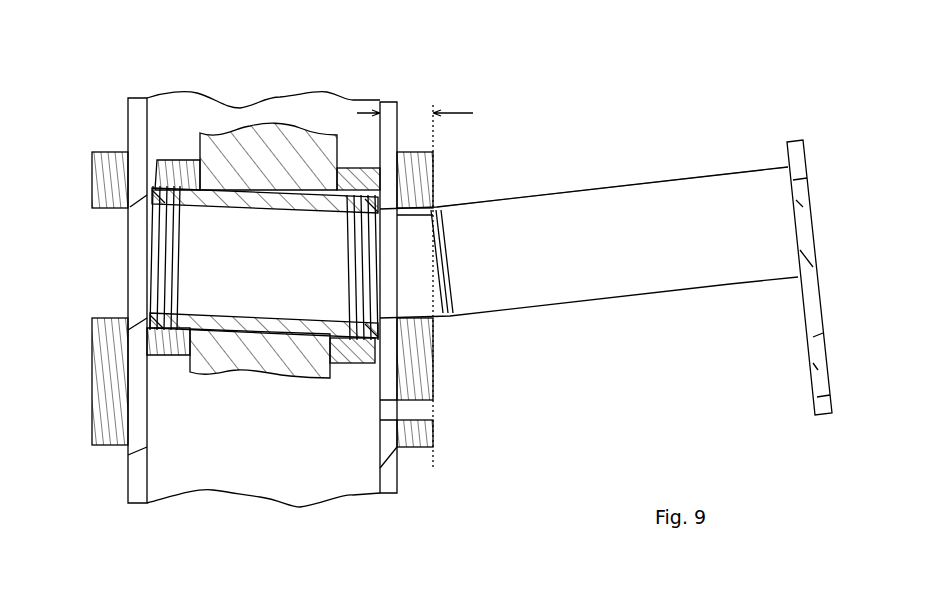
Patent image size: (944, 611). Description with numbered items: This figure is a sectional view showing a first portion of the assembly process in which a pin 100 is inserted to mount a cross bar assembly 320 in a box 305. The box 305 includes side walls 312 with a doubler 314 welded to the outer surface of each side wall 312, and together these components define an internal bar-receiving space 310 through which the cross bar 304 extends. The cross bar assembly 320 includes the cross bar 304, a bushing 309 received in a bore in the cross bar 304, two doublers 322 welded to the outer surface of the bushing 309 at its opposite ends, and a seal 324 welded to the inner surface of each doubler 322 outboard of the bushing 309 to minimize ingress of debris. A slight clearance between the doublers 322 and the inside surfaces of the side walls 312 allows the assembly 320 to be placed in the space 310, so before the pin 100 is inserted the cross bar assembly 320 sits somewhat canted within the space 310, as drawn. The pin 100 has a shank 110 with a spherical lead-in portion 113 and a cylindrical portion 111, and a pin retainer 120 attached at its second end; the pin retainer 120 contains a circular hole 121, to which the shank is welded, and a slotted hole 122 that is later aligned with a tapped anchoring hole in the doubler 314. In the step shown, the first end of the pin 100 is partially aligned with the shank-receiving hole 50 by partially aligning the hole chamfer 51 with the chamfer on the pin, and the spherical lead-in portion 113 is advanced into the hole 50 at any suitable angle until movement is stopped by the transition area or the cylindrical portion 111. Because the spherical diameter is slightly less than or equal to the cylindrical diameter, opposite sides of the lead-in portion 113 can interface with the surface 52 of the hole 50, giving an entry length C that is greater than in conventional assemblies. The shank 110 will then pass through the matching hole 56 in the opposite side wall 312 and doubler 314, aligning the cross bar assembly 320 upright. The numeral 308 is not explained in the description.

The pin 100 is at (589, 238).
The shank 110 is at (609, 314).
The cylindrical portion 111 is at (730, 284).
The pin retainer 120 is at (815, 277).
The circular hole 121 is at (817, 200).
The slotted hole 122 is at (807, 367).
The shank-receiving hole 50 is at (427, 212).
The hole chamfer 51 is at (437, 320).
The surface of the matching cylindrical hole 52 is at (430, 290).
The matching hole 56 is at (118, 317).
The spherical lead-in portion 113 is at (410, 253).
The cross bar 304 is at (305, 133).
The box 305 is at (432, 475).
The sleeve 308 is at (430, 187).
The bushing 309 is at (240, 323).
The internal bar-receiving space 310 is at (147, 408).
The side walls 312 is at (137, 482).
The doubler 314 is at (97, 427).
The cross bar assembly 320 is at (289, 409).
The doublers 322 is at (176, 160).
The seal 324 is at (160, 232).
The entry length C is at (413, 118).